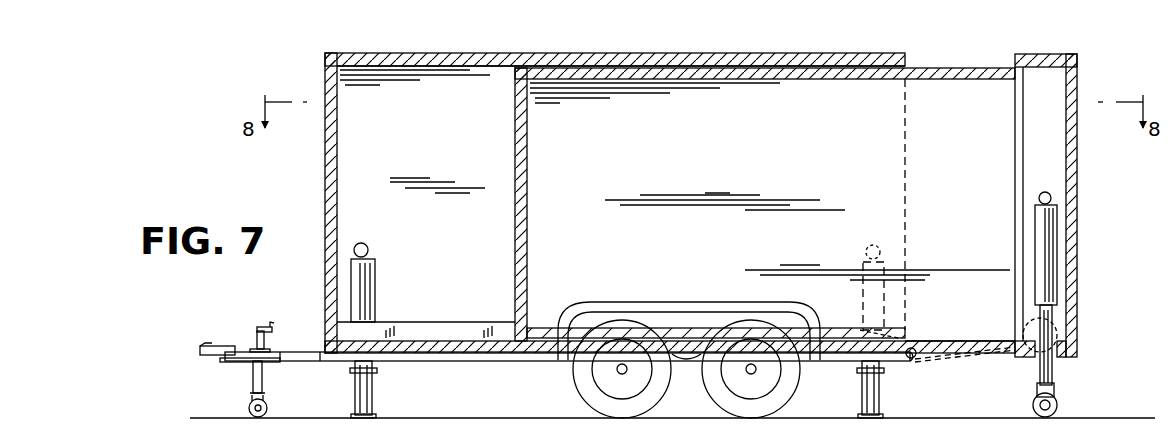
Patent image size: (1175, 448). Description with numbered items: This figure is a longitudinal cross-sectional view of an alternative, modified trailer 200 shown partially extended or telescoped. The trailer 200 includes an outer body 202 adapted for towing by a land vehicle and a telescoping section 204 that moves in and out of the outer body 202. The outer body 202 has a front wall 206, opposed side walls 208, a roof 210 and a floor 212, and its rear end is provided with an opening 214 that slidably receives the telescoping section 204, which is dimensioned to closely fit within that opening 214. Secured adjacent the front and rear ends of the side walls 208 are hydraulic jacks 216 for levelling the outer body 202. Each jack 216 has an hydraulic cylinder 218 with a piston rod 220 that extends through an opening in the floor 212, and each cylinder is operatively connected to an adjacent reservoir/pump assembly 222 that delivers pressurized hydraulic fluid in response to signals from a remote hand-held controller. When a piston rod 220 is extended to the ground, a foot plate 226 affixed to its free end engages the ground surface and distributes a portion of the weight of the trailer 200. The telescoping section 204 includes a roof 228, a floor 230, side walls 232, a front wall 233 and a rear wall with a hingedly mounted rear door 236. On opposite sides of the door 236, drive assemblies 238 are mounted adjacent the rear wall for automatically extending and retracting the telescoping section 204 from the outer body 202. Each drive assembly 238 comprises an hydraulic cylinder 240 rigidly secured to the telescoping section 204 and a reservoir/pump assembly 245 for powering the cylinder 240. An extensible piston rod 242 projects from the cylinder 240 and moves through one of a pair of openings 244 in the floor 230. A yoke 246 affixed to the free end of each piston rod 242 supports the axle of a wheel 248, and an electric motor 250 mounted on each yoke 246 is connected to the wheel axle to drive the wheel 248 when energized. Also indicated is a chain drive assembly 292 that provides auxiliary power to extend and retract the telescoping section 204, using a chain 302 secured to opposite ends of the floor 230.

The modified trailer 200 is at (633, 46).
The outer body 202 is at (398, 50).
The telescoping section 204 is at (938, 68).
The front wall 206 is at (325, 170).
The side walls 208 is at (443, 133).
The roof 210 is at (558, 52).
The floor 212 is at (458, 352).
The opening 214 is at (912, 62).
The hydraulic jacks 216 is at (379, 290).
The hydraulic cylinder 218 is at (858, 300).
The piston rod 220 is at (374, 385).
The reservoir/pump assembly 222 is at (367, 244).
The foot plate 226 is at (357, 410).
The roof 228 is at (992, 67).
The floor 230 is at (925, 338).
The side walls 232 is at (766, 136).
The front wall 233 is at (527, 263).
The rear door 236 is at (1077, 178).
The drive assemblies 238 is at (1061, 234).
The hydraulic cylinder 240 is at (1055, 262).
The extensible piston rod 242 is at (1050, 326).
The openings 244 is at (1059, 368).
The reservoir/pump assembly 245 is at (1040, 194).
The yoke 246 is at (1054, 393).
The wheel 248 is at (1034, 408).
The electric motor 250 is at (1040, 400).
The chain drive assembly 292 is at (907, 368).
The chain 302 is at (940, 362).